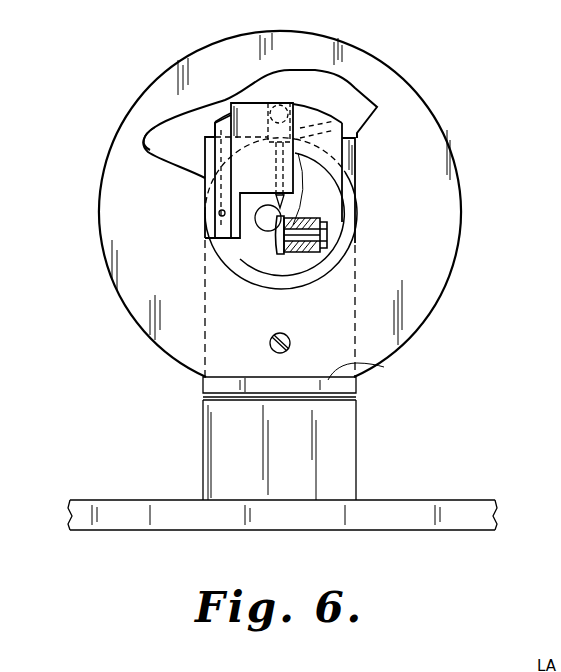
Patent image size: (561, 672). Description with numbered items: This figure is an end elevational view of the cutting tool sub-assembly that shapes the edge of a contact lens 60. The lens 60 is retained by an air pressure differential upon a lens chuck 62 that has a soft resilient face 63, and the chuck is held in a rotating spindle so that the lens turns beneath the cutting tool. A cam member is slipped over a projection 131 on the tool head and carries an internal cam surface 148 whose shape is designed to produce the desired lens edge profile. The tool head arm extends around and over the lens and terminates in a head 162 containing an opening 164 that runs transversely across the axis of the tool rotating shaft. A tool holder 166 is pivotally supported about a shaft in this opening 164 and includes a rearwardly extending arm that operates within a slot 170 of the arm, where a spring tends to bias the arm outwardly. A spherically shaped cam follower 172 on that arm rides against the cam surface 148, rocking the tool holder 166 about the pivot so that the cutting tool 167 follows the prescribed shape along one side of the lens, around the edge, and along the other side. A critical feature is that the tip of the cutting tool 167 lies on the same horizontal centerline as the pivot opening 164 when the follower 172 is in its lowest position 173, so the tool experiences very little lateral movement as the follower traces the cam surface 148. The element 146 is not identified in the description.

The projection 131 is at (385, 366).
The cam surface 148 is at (337, 82).
The lowest position 173 is at (170, 163).
The slot 170 is at (338, 123).
The cam follower 172 is at (286, 103).
The tool holder 166 is at (262, 170).
The cutting tool 167 is at (290, 197).
The head 162 is at (222, 183).
The opening 164 is at (219, 215).
The contact lens 60 is at (275, 247).
The lens chuck 62 is at (302, 253).
The soft resilient face 63 is at (277, 274).
The screw 146 is at (290, 341).